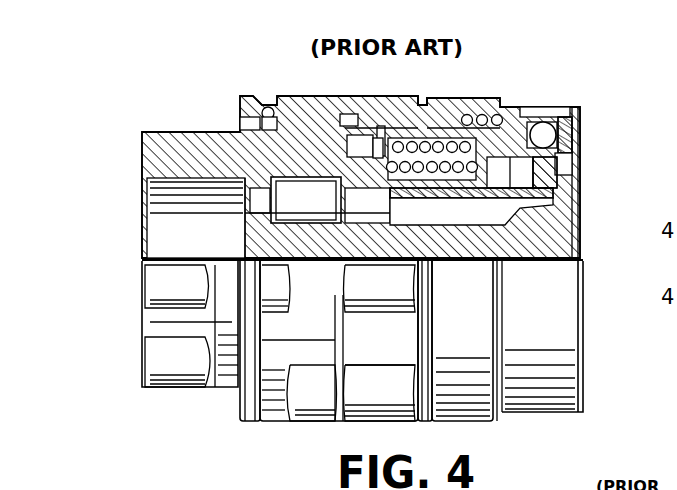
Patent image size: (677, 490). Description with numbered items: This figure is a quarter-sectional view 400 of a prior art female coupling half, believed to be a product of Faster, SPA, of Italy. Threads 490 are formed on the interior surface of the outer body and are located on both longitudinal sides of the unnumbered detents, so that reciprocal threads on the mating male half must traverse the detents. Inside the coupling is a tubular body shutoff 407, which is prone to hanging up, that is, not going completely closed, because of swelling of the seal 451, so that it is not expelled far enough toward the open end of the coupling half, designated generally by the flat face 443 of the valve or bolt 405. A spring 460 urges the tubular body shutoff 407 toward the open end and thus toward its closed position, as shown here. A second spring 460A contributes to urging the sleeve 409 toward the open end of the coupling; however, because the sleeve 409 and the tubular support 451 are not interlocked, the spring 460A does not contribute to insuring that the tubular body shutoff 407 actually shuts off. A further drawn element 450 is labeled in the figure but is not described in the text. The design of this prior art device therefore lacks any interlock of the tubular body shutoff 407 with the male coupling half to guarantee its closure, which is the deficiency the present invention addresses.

The quarter-sectional view 400 is at (138, 100).
The spring 460A is at (337, 96).
The tubular body shutoff 407 is at (474, 178).
The threads 490 is at (550, 170).
The sleeve 409 is at (553, 170).
The valve body 450 is at (553, 200).
The flat face of valve or bolt 443 is at (553, 238).
The valve or bolt 405 is at (517, 262).
The spring 460 is at (305, 168).
The seal 451 is at (400, 192).